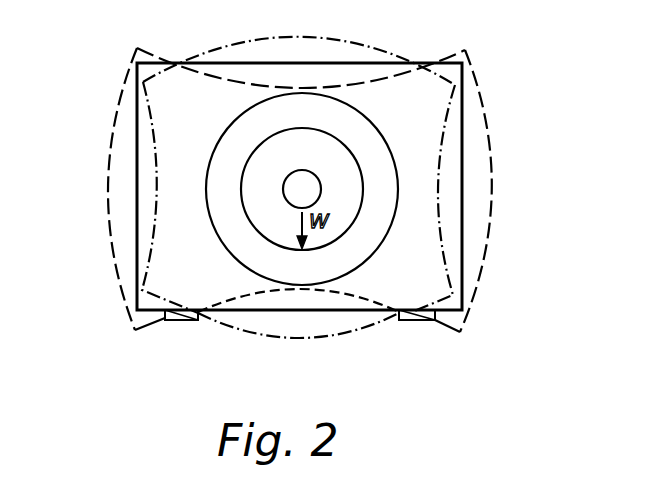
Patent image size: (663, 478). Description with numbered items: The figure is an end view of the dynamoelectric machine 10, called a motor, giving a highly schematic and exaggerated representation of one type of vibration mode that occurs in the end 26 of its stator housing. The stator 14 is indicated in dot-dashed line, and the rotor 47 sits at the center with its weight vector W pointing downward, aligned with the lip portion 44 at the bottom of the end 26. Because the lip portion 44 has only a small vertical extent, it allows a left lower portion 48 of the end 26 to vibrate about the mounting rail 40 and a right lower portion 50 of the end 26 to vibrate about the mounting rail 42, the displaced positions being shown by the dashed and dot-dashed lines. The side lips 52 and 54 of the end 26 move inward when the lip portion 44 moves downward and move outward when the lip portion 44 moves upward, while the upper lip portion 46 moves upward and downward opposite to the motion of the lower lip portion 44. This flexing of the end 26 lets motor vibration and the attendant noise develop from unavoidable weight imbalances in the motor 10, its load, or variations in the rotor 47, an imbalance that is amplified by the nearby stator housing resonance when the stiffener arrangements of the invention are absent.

The dynamoelectric machine 10 is at (502, 178).
The stator 14 is at (375, 150).
The end 26 is at (448, 163).
The mounting rail 40 is at (178, 322).
The mounting rail 42 is at (420, 322).
The lip portion 44 is at (315, 300).
The upper lip portion 46 is at (307, 73).
The rotor 47 is at (265, 175).
The left lower portion 48 is at (218, 275).
The right lower portion 50 is at (428, 275).
The side lip 52 is at (177, 200).
The side lip 54 is at (422, 190).